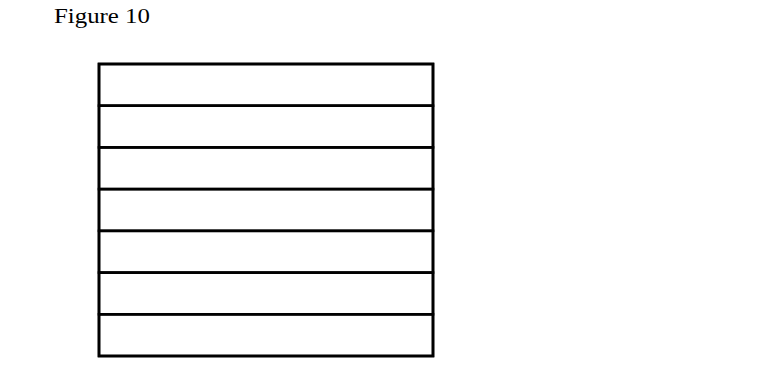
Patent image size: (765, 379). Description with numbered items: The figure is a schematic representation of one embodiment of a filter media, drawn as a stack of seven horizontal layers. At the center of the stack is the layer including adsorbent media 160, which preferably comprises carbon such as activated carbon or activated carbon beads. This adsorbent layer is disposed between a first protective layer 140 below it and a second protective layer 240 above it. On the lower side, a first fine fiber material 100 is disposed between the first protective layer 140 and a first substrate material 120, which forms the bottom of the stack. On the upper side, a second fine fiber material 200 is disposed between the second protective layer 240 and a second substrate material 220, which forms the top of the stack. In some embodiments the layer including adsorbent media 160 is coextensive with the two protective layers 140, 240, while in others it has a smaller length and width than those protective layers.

The second substrate material 220 is at (266, 85).
The second fine fiber material 200 is at (266, 127).
The second protective layer 240 is at (266, 168).
The layer including adsorbent media 160 is at (266, 210).
The first protective layer 140 is at (266, 252).
The first fine fiber material 100 is at (266, 294).
The first substrate material 120 is at (266, 335).